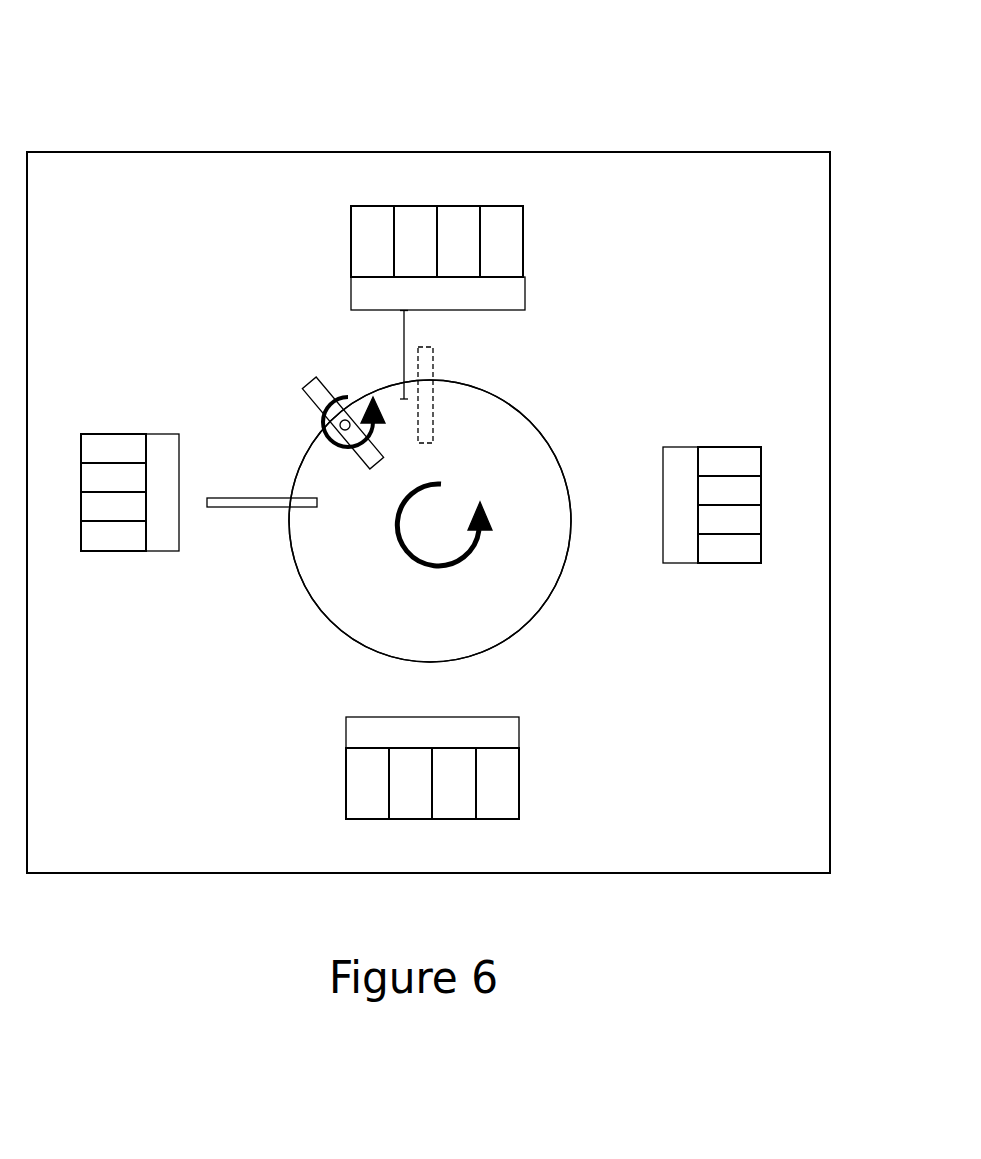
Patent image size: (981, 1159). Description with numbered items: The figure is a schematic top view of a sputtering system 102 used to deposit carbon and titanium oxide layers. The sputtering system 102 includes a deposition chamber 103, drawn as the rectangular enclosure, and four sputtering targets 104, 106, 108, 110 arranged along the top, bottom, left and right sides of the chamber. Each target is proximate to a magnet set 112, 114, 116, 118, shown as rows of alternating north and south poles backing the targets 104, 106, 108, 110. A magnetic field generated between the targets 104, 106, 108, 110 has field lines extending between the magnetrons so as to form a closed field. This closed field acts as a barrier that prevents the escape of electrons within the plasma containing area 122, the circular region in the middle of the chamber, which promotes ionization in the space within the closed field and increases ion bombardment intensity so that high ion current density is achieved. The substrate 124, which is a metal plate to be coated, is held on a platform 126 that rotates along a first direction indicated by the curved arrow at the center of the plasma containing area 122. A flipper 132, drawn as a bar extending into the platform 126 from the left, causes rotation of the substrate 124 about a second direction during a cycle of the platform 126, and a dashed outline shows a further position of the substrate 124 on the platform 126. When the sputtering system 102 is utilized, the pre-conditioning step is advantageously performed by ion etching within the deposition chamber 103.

The sputtering system 102 is at (584, 78).
The deposition chamber 103 is at (208, 150).
The sputtering target 104 is at (351, 288).
The sputtering target 106 is at (520, 729).
The sputtering target 108 is at (167, 440).
The sputtering target 110 is at (690, 445).
The magnet set 112 is at (536, 235).
The magnet set 114 is at (319, 782).
The magnet set 116 is at (122, 571).
The magnet set 118 is at (728, 578).
The plasma containing area 122 is at (566, 404).
The substrate 124 is at (312, 382).
The platform 126 is at (318, 607).
The flipper 132 is at (260, 497).